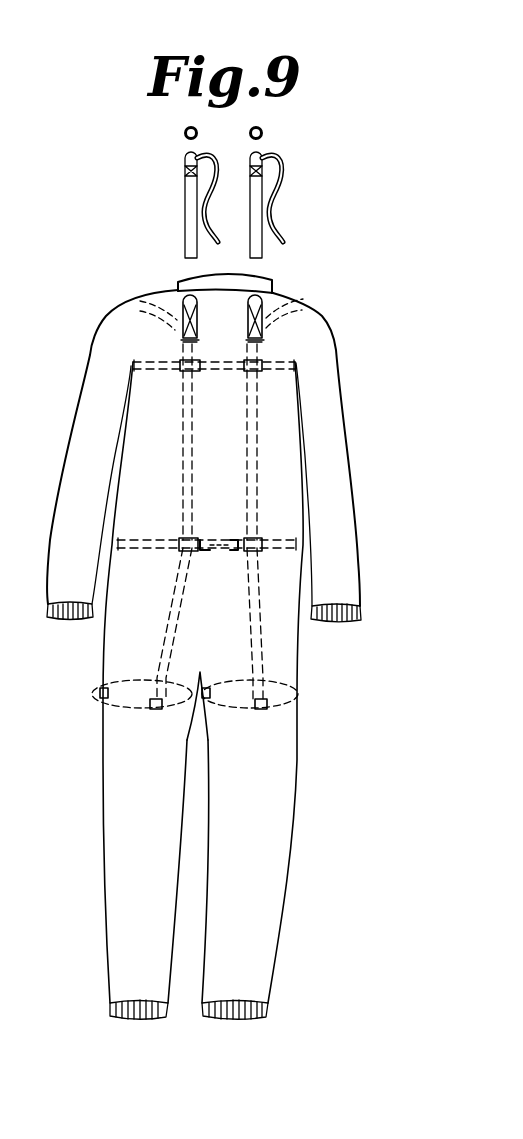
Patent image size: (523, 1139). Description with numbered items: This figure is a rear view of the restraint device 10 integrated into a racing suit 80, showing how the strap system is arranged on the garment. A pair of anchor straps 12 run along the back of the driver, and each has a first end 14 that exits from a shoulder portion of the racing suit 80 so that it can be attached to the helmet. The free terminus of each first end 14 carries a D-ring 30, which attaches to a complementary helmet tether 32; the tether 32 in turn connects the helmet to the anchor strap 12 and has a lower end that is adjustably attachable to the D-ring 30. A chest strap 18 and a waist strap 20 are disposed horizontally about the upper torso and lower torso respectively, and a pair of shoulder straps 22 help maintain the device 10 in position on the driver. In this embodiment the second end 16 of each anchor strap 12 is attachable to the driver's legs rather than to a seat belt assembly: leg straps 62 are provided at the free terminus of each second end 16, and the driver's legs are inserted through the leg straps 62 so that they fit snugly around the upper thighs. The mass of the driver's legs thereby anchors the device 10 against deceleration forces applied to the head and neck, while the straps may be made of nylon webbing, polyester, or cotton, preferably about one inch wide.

The restraint device 10 is at (72, 757).
The anchor straps 12 is at (253, 423).
The first end 14 is at (178, 314).
The second end 16 is at (170, 625).
The chest strap 18 is at (295, 362).
The waist strap 20 is at (270, 543).
The shoulder straps 22 is at (147, 302).
The D-ring 30 is at (252, 298).
The helmet tether 32 is at (188, 232).
The leg straps 62 is at (123, 687).
The racing suit 80 is at (305, 322).